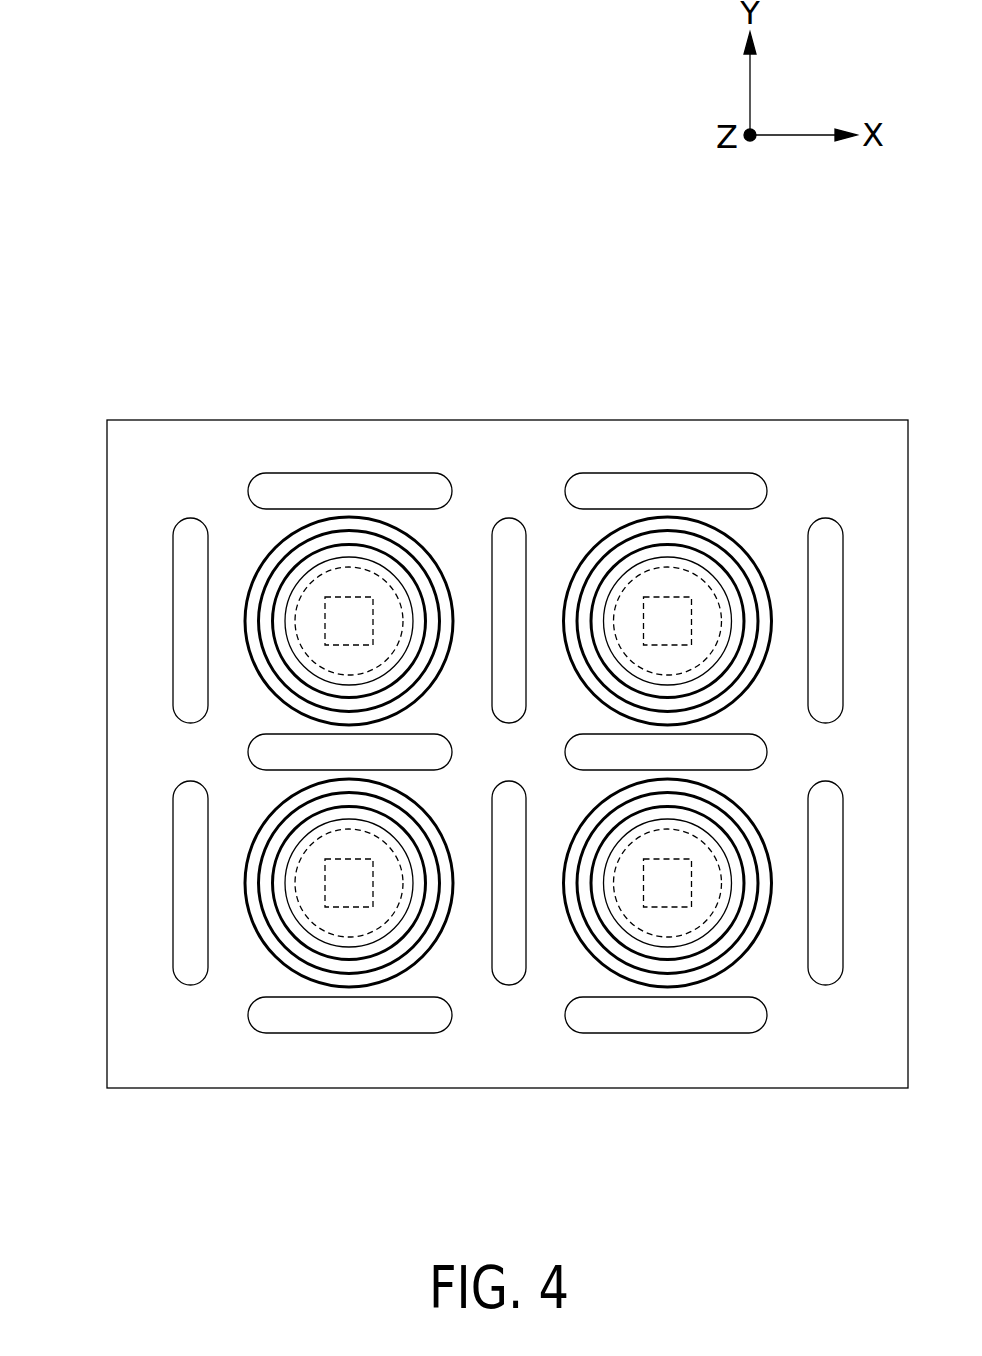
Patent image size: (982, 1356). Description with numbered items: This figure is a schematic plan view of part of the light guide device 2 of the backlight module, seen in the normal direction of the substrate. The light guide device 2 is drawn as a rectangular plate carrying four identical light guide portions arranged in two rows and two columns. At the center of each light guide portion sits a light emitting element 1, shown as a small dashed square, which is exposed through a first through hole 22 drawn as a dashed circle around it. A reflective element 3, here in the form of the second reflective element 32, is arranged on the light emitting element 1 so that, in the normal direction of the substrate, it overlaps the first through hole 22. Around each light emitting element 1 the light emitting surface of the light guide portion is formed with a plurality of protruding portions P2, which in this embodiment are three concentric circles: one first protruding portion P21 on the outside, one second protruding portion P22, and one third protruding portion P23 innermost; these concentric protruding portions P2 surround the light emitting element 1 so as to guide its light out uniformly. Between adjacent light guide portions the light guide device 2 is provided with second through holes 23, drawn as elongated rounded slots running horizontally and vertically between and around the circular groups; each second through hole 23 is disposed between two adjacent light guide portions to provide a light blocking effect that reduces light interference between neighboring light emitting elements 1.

The light emitting element 1 is at (362, 607).
The light guide device 2 is at (133, 590).
The reflective element 3 is at (293, 653).
The second reflective element 32 is at (213, 621).
The first through hole 22 is at (335, 568).
The second through hole 23 is at (417, 492).
The protruding portion P2 is at (271, 521).
The first protruding portion P21 is at (270, 555).
The second protruding portion P22 is at (262, 583).
The third protruding portion P23 is at (272, 622).